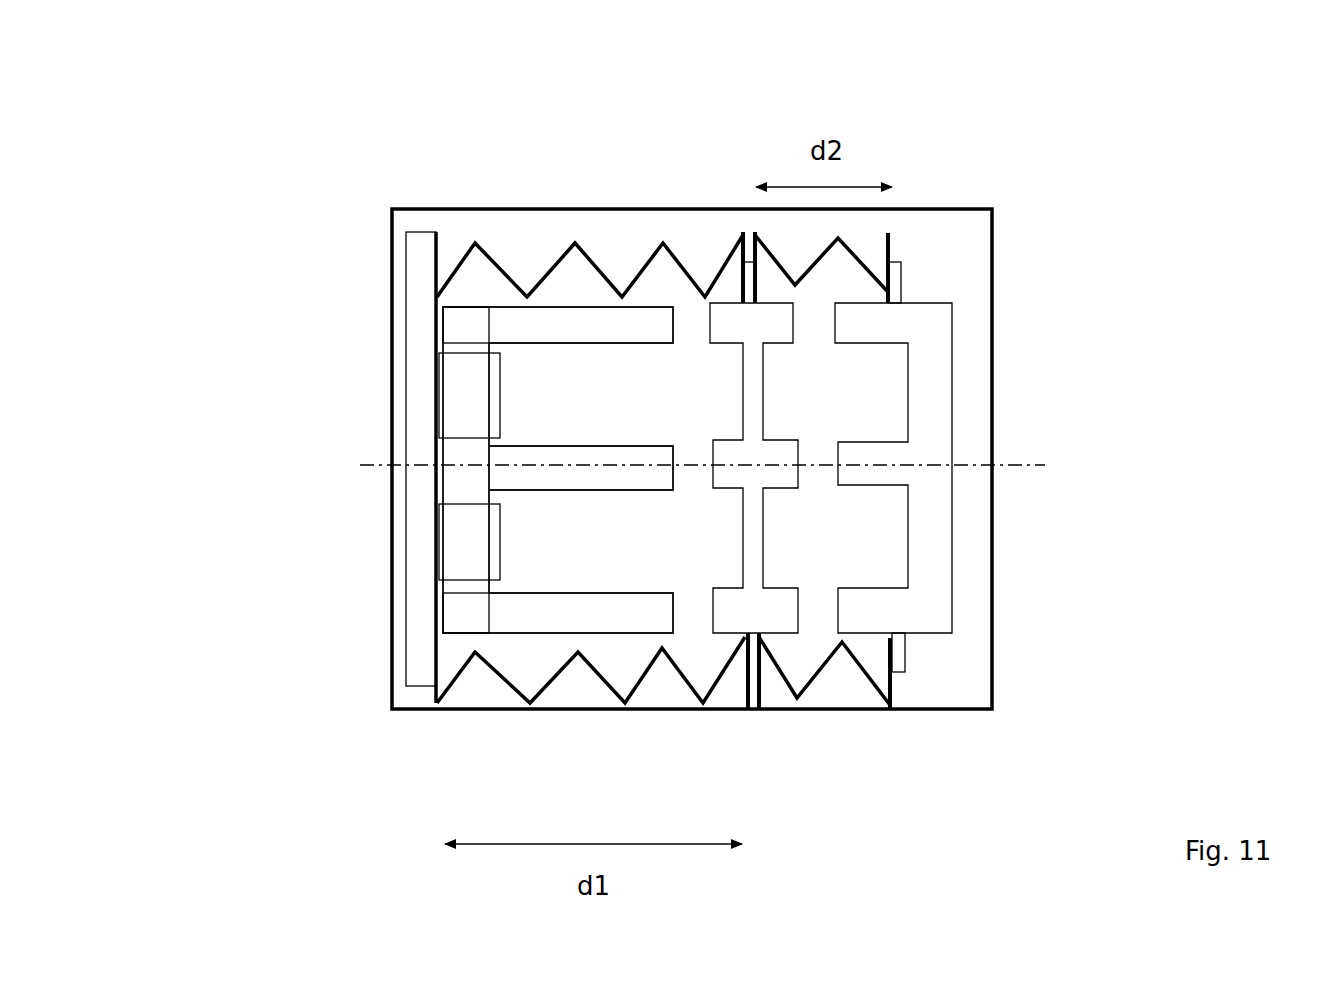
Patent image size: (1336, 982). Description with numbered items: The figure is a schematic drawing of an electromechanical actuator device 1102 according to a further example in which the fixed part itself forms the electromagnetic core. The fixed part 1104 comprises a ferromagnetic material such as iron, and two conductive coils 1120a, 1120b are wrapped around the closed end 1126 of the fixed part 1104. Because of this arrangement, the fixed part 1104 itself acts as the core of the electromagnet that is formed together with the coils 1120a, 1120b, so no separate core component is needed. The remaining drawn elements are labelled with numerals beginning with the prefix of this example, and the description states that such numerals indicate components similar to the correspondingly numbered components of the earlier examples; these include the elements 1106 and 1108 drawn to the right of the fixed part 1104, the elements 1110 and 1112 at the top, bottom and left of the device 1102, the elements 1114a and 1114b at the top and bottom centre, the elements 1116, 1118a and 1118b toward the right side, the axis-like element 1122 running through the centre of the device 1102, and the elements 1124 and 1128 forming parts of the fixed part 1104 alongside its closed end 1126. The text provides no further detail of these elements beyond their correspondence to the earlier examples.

The device 1102 is at (198, 172).
The fixed part 1104 is at (673, 578).
The second conductive element 1106 is at (722, 290).
The third conductive element 1108 is at (963, 323).
The zigzag conductor 1110 is at (553, 265).
The side conductor 1112 is at (422, 582).
The first feed line 1114a is at (748, 262).
The second feed line 1114b is at (750, 712).
The end conductor 1116 is at (889, 237).
The first connector 1118a is at (903, 280).
The second connector 1118b is at (903, 652).
The conductive coil 1120a is at (470, 385).
The conductive coil 1120b is at (466, 540).
The center axis 1122 is at (743, 466).
The outer arm 1124 is at (527, 322).
The closed end 1126 is at (453, 452).
The middle arm 1128 is at (658, 478).